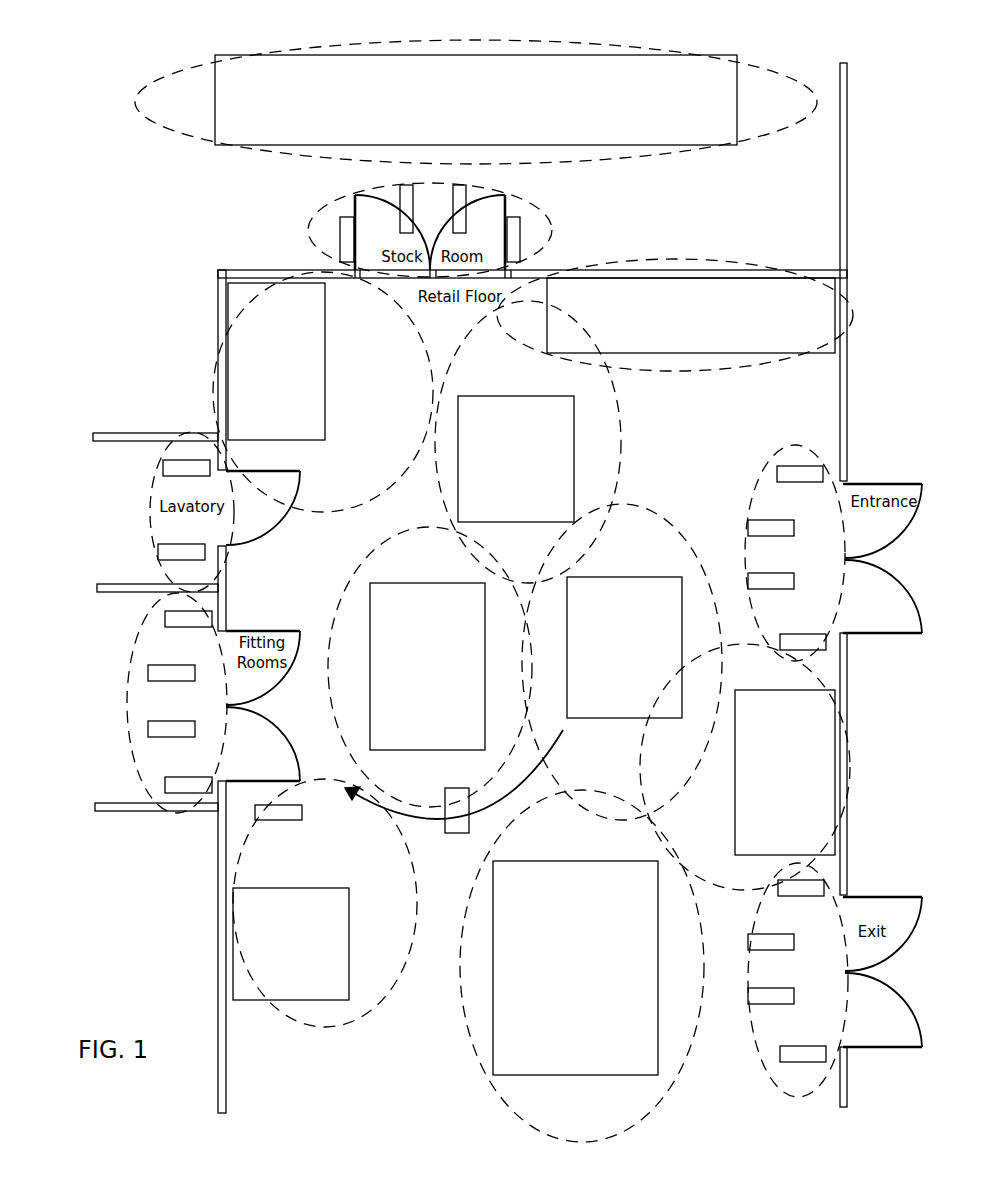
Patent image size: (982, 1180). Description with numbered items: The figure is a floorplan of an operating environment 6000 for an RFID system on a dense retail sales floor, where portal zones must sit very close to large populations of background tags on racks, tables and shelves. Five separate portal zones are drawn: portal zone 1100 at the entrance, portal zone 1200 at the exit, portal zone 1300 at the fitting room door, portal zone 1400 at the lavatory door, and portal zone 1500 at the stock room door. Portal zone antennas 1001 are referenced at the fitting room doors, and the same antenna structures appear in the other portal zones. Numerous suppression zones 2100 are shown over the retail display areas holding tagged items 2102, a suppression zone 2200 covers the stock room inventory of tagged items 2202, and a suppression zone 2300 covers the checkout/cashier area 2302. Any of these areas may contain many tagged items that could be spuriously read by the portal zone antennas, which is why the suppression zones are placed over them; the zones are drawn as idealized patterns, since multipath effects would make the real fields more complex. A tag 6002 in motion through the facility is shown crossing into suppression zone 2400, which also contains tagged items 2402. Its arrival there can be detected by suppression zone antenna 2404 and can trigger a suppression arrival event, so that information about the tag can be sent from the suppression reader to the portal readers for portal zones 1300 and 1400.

The operating environment 6000 is at (128, 42).
The tag 6002 is at (458, 836).
The tagged items 2202 is at (476, 100).
The suppression zone 2200 is at (203, 142).
The portal zone 1500 is at (560, 222).
The tagged items 2102 is at (531, 566).
The suppression zones 2100 is at (658, 375).
The portal zone 1100 is at (812, 448).
The portal zone 1200 is at (776, 1085).
The portal zone 1300 is at (138, 763).
The portal zone 1400 is at (153, 483).
The portal zone antennas 1001 is at (165, 620).
The suppression zone antenna 2404 is at (298, 820).
The tagged items 2402 is at (291, 944).
The suppression zone 2400 is at (307, 1027).
The checkout/cashier area 2302 is at (575, 968).
The suppression zone 2300 is at (498, 1092).